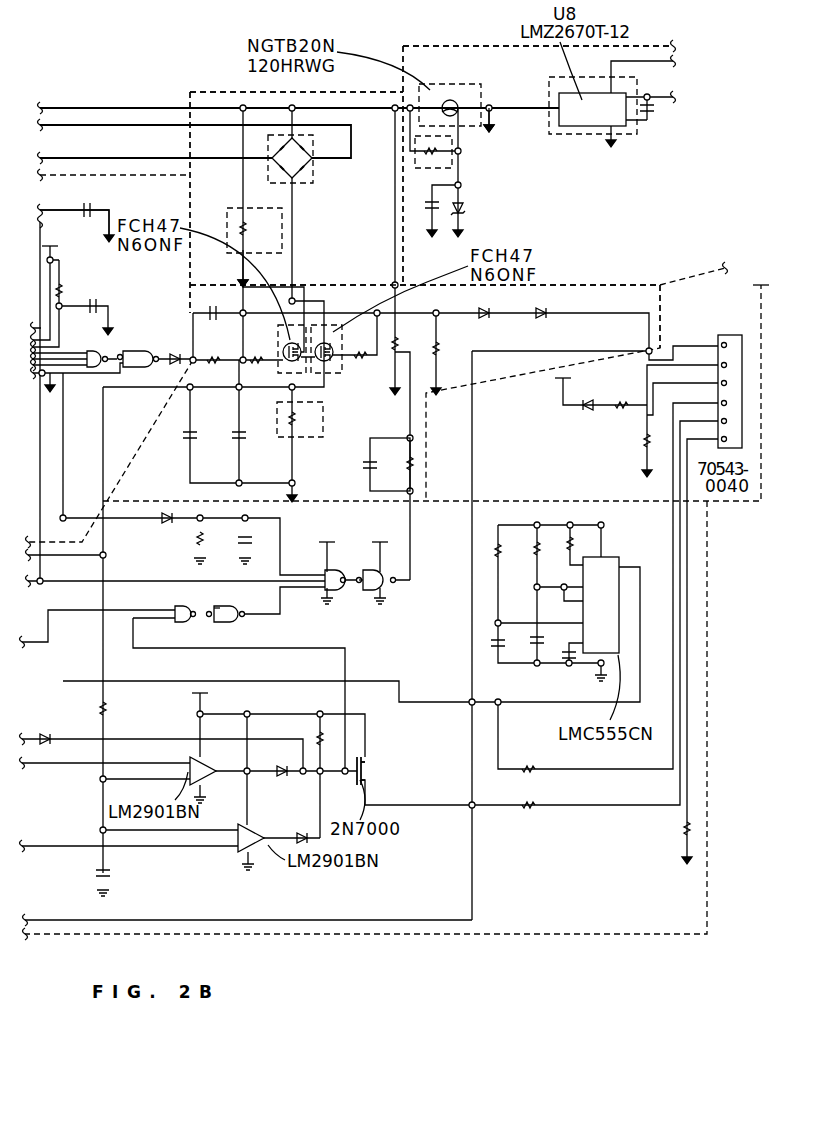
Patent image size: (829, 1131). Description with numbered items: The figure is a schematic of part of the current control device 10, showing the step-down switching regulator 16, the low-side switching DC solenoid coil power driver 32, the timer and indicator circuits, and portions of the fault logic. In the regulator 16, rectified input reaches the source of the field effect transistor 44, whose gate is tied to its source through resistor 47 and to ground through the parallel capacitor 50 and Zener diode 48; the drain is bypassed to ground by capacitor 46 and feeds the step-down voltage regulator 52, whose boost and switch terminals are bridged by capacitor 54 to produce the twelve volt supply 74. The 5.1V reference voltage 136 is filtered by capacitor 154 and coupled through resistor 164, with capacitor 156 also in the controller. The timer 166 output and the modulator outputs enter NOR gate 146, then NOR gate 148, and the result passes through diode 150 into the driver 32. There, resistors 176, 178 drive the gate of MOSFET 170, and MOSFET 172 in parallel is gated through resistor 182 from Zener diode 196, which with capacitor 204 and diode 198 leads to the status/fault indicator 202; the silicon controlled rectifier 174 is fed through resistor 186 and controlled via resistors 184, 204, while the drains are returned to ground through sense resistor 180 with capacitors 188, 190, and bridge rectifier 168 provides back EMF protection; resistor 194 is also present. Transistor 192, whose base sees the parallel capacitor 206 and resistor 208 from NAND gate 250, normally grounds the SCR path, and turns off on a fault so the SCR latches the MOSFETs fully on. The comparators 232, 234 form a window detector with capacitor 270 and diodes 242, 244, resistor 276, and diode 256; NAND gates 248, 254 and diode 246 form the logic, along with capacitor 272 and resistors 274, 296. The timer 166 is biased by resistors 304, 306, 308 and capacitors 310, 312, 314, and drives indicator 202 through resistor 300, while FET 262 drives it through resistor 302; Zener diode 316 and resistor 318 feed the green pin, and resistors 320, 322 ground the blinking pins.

The current control device 10 is at (578, 960).
The step-down switching regulator 16 is at (439, 46).
The low-side switching DC solenoid coil power driver 32 is at (210, 92).
The field effect transistor 44 is at (462, 87).
The capacitor 46 is at (490, 118).
The resistor 47 is at (415, 148).
The Zener diode 48 is at (460, 208).
The capacitor 50 is at (434, 216).
The step-down voltage regulator 52 is at (558, 134).
The capacitor 54 is at (648, 113).
The 12V output voltage 74 is at (50, 246).
The 5.1V reference voltage 136 is at (41, 223).
The NOR gate 146 is at (92, 352).
The NOR gate 148 is at (140, 368).
The diode 150 is at (175, 354).
The capacitor 154 is at (93, 306).
The capacitor 156 is at (92, 215).
The resistor 164 is at (62, 292).
The timer 166 is at (612, 558).
The bridge rectifier 168 is at (313, 170).
The MOSFET 170 is at (292, 297).
The MOSFET 172 is at (330, 340).
The silicon controlled rectifier 174 is at (242, 280).
The resistor 176 is at (215, 356).
The resistor 178 is at (258, 363).
The sense resistor 180 is at (283, 435).
The resistor 182 is at (364, 359).
The resistor 184 is at (353, 285).
The resistor 186 is at (282, 231).
The capacitor 188 is at (194, 442).
The capacitor 190 is at (242, 440).
The transistor 192 is at (397, 342).
The resistor 194 is at (434, 352).
The Zener diode 196 is at (484, 318).
The diode 198 is at (542, 318).
The status/fault indicator 202 is at (726, 335).
The capacitor 204 is at (213, 312).
The capacitor 206 is at (370, 466).
The resistor 208 is at (412, 468).
The comparator 232 is at (195, 758).
The comparator 234 is at (238, 832).
The diode 242 is at (284, 768).
The diode 244 is at (301, 832).
The diode 246 is at (167, 514).
The NAND gate 248 is at (182, 618).
The NAND gate 250 is at (240, 618).
The NAND gate 254 is at (228, 608).
The diode 256 is at (44, 737).
The FET 262 is at (363, 760).
The capacitor 270 is at (108, 873).
The capacitor 272 is at (250, 540).
The resistor 274 is at (103, 712).
The resistor 276 is at (322, 740).
The resistor 296 is at (198, 545).
The resistor 300 is at (530, 769).
The resistor 302 is at (530, 805).
The resistor 304 is at (495, 548).
The resistor 306 is at (535, 555).
The resistor 308 is at (570, 545).
The capacitor 310 is at (493, 640).
The capacitor 312 is at (533, 648).
The capacitor 314 is at (572, 663).
The Zener diode 316 is at (582, 408).
The resistor 318 is at (623, 402).
The resistor 320 is at (645, 443).
The resistor 322 is at (685, 830).